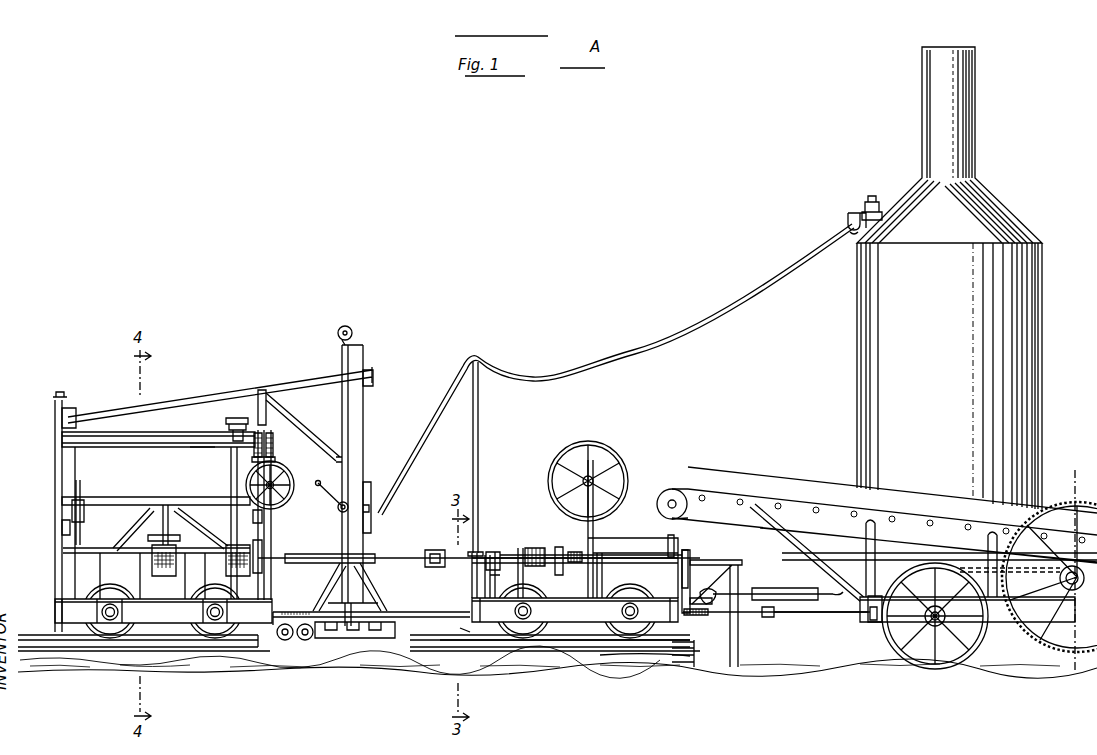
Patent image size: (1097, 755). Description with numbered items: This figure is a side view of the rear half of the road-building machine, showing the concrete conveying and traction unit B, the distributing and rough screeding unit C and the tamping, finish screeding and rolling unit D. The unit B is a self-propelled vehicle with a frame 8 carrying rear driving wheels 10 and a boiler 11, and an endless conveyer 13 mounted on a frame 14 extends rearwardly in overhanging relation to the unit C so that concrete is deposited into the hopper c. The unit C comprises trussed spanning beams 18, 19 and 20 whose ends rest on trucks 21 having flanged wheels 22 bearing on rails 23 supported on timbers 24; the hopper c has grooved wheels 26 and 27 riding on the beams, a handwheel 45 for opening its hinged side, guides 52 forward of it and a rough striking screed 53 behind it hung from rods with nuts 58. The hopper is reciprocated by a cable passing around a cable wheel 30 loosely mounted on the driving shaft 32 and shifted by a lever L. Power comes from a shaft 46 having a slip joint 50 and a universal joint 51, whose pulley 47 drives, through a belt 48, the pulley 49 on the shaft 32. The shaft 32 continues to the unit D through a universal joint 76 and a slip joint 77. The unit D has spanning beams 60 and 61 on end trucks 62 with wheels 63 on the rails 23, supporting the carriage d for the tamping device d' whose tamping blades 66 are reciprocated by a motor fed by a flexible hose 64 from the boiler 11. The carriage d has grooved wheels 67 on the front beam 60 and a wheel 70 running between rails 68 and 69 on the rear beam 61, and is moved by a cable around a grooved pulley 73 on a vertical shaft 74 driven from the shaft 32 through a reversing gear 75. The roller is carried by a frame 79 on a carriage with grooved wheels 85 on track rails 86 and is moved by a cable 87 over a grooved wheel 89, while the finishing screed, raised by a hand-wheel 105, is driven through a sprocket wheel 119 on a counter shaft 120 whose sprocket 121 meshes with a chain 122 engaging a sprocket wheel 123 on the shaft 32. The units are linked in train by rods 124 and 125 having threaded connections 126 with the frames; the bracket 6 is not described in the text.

The concrete conveying and traction unit B is at (955, 278).
The boiler 11 is at (955, 398).
The flexible hose 64 is at (630, 360).
The rear spanning beam 20 is at (479, 562).
The mast bracket 6 is at (372, 525).
The tamping, finish screeding and rolling unit D is at (193, 502).
The wheels 63 is at (106, 592).
The end trucks 62 is at (163, 611).
The rear spanning beam 61 is at (56, 485).
The horizontal rail 68 is at (60, 396).
The wheel 70 is at (70, 415).
The horizontal rail 69 is at (64, 437).
The tamper carriage d is at (220, 395).
The grooved wheels 67 is at (263, 395).
The grooved pulley 73 is at (235, 424).
The vertical shaft 74 is at (240, 497).
The counter shaft 120 is at (199, 447).
The grooved wheels 85 is at (75, 504).
The track rails 86 is at (64, 528).
The vertically movable frame 79 is at (127, 532).
The grooved wheel 89 is at (197, 528).
The endless cable 87 is at (177, 541).
The reversing gear 75 is at (232, 545).
The sprocket wheel 119 is at (264, 455).
The sprocket wheel 121 is at (256, 453).
The front spanning beam 60 is at (281, 484).
The hand-wheel 105 is at (324, 497).
The sprocket chain 122 is at (263, 522).
The sprocket wheel 123 is at (265, 570).
The driving shaft 32 is at (479, 546).
The slip joint 77 is at (335, 556).
The tamping device d' is at (389, 537).
The universal joint 76 is at (433, 550).
The tamping blades 66 is at (390, 618).
The adjusting rod 125 is at (418, 614).
The rough striking screed 53 is at (470, 628).
The distributing and rough screeding unit C is at (568, 569).
The flanged wheels 22 is at (522, 628).
The trucks 21 is at (590, 612).
The rails 23 is at (568, 643).
The timbers 24 is at (630, 662).
The handwheel 45 is at (617, 463).
The lever L is at (594, 535).
The nuts 58 is at (497, 552).
The universal joint 51 is at (492, 576).
The grooved wheels 27 is at (567, 548).
The cable wheel 30 is at (543, 569).
The middle spanning beam 19 is at (576, 566).
The hopper c is at (632, 571).
The front spanning beam 18 is at (682, 570).
The grooved wheels 26 is at (674, 541).
The conveyer frame 14 is at (926, 528).
The endless conveyer 13 is at (750, 518).
The frame 8 is at (967, 609).
The rear driving wheels 10 is at (856, 612).
The guides 52 is at (739, 665).
The belt 48 is at (692, 570).
The pulley 47 is at (712, 568).
The threaded connections 126 is at (705, 616).
The adjusting rod 124 is at (825, 621).
The slip joint 50 is at (773, 584).
The shaft 46 is at (834, 590).
The pulley 49 is at (686, 606).